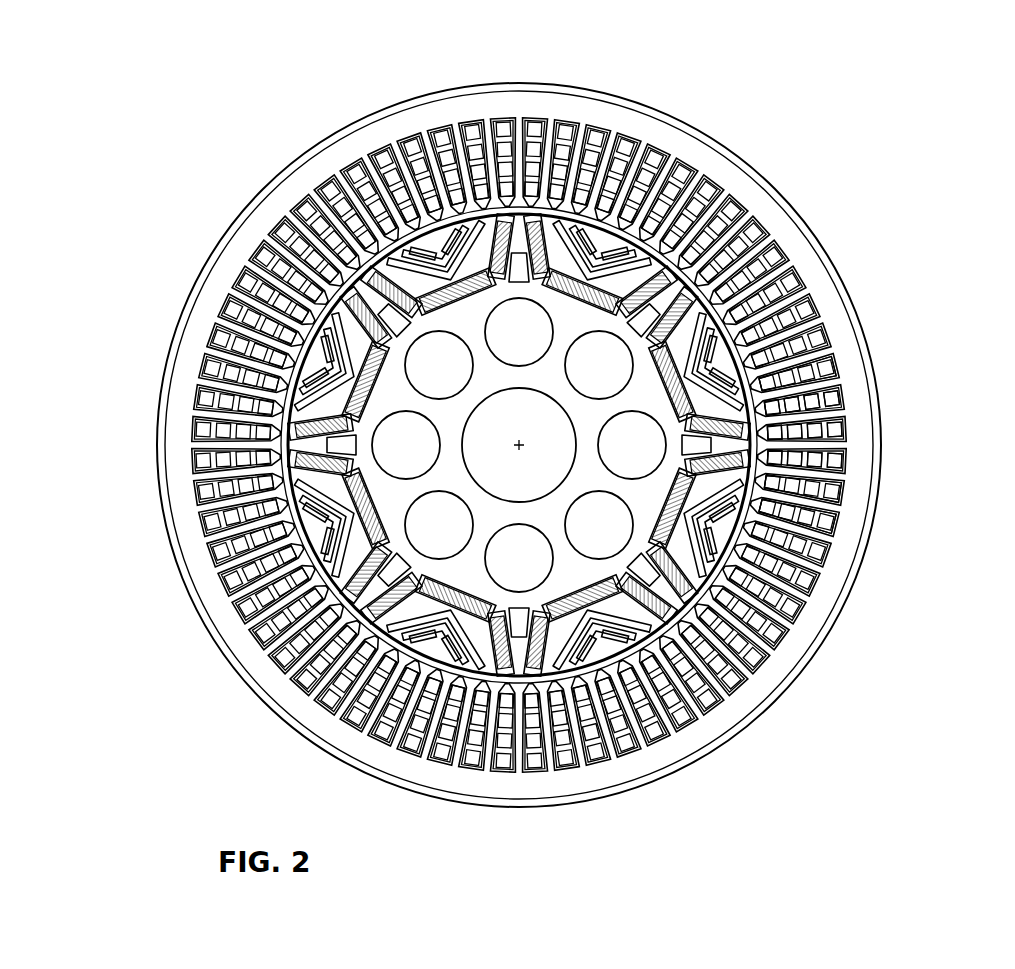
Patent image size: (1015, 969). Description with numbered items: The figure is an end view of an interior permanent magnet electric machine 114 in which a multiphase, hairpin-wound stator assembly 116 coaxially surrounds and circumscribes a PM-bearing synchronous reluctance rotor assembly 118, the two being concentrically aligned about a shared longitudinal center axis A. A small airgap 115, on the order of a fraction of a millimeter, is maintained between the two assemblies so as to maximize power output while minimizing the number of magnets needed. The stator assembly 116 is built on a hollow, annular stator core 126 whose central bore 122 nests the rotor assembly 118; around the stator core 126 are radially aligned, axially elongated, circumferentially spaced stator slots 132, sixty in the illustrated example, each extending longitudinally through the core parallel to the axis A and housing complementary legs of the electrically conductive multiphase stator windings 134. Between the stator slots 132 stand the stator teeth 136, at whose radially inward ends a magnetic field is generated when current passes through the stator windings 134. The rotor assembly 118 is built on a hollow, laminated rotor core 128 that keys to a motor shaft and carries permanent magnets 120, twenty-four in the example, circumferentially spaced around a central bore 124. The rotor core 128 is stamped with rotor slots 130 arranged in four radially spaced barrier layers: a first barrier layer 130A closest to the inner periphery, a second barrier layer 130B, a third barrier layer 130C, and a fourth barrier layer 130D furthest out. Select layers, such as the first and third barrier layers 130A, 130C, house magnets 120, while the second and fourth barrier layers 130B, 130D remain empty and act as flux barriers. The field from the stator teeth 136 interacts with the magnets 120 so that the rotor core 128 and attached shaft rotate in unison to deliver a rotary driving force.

The electric machine 114 is at (536, 436).
The airgap 115 is at (531, 207).
The stator assembly 116 is at (541, 464).
The rotor assembly 118 is at (268, 432).
The permanent magnets 120 is at (283, 462).
The central bore 122 is at (800, 470).
The central bore 124 is at (496, 426).
The stator core 126 is at (828, 252).
The rotor core 128 is at (519, 213).
The rotor slots 130 is at (416, 352).
The first barrier layer 130A is at (413, 267).
The second barrier layer 130B is at (420, 258).
The third barrier layer 130C is at (424, 254).
The fourth barrier layer 130D is at (451, 243).
The stator slots 132 is at (843, 408).
The stator windings 134 is at (826, 365).
The stator teeth 136 is at (665, 352).
The longitudinal center axis A is at (524, 447).